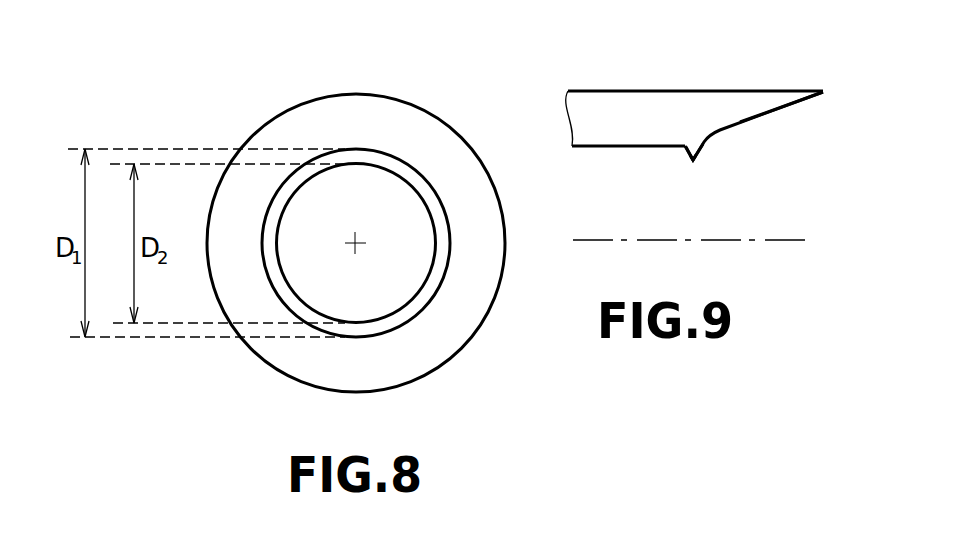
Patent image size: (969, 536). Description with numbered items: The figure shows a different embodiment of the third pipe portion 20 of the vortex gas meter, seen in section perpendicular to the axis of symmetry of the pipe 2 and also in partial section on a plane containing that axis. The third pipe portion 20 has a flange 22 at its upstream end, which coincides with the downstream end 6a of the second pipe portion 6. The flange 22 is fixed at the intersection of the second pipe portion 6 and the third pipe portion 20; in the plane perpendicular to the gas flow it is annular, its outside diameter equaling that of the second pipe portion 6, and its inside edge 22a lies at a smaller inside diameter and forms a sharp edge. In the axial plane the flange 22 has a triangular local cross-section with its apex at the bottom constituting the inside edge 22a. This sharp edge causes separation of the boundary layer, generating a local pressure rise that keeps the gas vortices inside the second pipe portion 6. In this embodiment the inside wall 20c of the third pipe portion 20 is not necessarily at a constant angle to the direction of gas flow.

In FIG. 8, the pipe 2 is at (417, 102).
In FIG. 9, the pipe 2 is at (610, 90).
In FIG. 9, the second pipe portion 6 is at (590, 145).
In FIG. 9, the downstream end of the second pipe portion 6a is at (695, 143).
In FIG. 9, the third pipe portion 20 is at (742, 103).
In FIG. 8, the inside wall of the third pipe portion 20c is at (355, 122).
In FIG. 9, the inside wall of the third pipe portion 20c is at (777, 107).
In FIG. 8, the flange 22 is at (410, 166).
In FIG. 9, the flange 22 is at (698, 151).
In FIG. 8, the inside edge of the flange 22a is at (393, 173).
In FIG. 9, the inside edge of the flange 22a is at (693, 162).